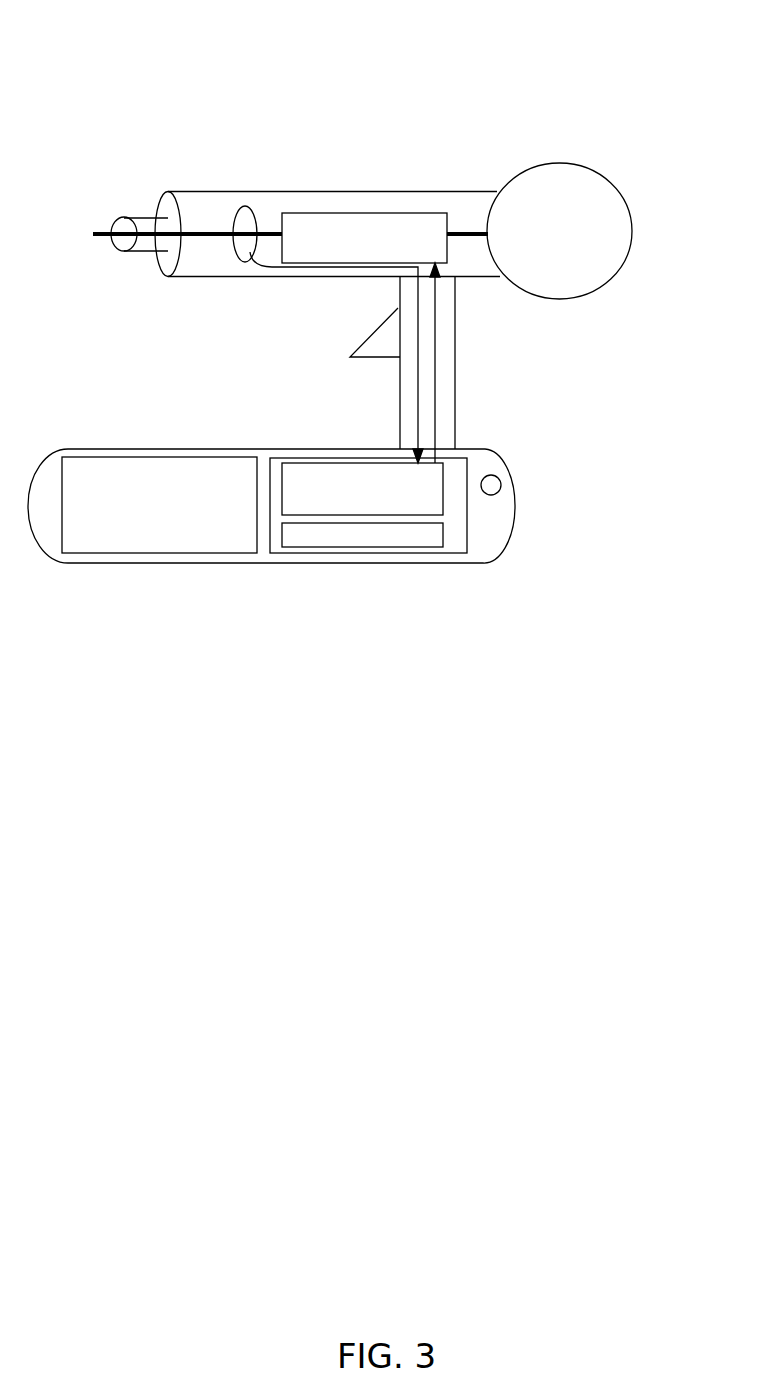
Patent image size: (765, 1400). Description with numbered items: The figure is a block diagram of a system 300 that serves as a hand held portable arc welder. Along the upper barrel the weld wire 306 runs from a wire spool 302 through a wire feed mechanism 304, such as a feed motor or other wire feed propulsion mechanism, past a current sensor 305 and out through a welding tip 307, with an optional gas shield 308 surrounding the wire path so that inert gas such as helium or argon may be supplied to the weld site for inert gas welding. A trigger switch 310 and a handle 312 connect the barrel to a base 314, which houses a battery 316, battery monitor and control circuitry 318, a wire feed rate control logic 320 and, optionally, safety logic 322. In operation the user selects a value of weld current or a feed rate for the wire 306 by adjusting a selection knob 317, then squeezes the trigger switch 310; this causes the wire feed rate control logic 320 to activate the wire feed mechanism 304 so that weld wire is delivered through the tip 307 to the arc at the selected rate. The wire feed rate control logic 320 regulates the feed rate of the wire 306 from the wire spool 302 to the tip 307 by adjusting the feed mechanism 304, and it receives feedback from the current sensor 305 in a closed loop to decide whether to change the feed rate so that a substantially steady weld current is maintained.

The system 300 is at (102, 19).
The wire spool 302 is at (549, 211).
The wire feed mechanism 304 is at (394, 209).
The current sensor 305 is at (179, 274).
The weld wire 306 is at (252, 210).
The welding tip 307 is at (98, 204).
The gas shield 308 is at (327, 217).
The trigger switch 310 is at (345, 357).
The handle 312 is at (483, 363).
The base 314 is at (321, 498).
The battery 316 is at (159, 542).
The selection knob 317 is at (542, 476).
The battery monitor and control circuitry 318 is at (424, 505).
The wire feed rate control logic 320 is at (414, 521).
The safety logic 322 is at (391, 574).